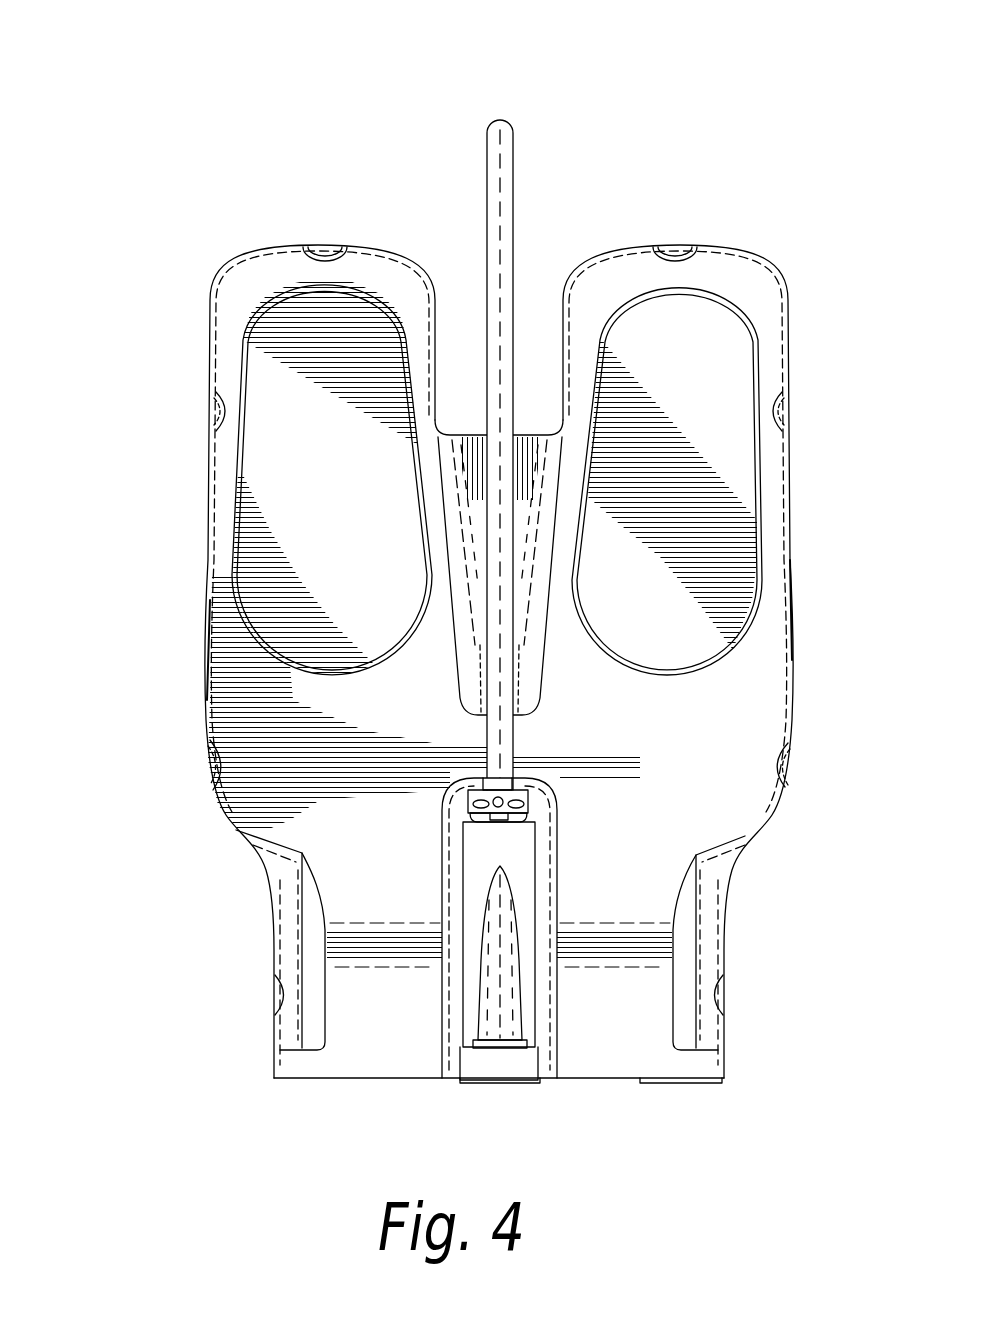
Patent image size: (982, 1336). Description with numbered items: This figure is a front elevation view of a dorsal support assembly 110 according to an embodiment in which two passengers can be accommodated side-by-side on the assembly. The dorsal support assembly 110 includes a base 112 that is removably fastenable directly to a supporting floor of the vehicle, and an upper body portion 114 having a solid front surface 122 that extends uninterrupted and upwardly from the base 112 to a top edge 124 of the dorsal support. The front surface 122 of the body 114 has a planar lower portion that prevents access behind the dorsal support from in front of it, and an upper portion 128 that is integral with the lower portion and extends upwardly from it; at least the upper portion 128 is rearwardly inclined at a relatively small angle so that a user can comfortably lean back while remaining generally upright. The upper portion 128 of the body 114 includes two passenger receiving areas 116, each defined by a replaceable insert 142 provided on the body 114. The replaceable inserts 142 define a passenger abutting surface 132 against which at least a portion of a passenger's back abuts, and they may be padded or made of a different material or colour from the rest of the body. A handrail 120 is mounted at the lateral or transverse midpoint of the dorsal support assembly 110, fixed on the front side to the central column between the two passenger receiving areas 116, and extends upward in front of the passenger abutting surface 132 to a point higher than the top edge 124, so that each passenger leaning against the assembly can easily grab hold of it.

The dorsal support assembly 110 is at (333, 182).
The base 112 is at (722, 1063).
The upper body portion 114 is at (190, 657).
The passenger receiving area 116 is at (228, 620).
The handrail 120 is at (487, 175).
The front surface 122 is at (370, 773).
The top edge 124 is at (637, 247).
The upper portion 128 is at (770, 448).
The passenger abutting surface 132 is at (465, 450).
The replaceable insert 142 is at (313, 352).